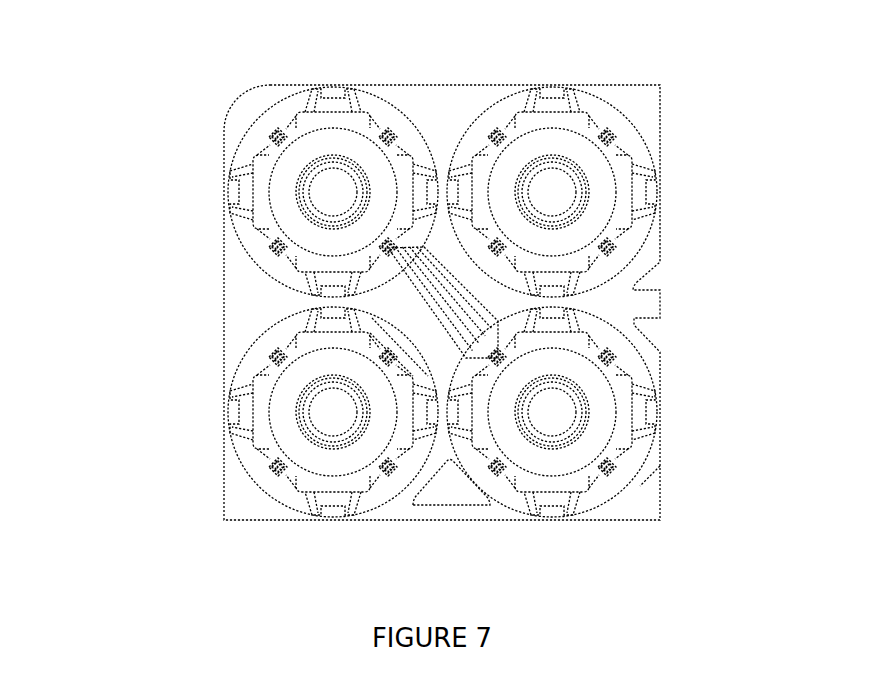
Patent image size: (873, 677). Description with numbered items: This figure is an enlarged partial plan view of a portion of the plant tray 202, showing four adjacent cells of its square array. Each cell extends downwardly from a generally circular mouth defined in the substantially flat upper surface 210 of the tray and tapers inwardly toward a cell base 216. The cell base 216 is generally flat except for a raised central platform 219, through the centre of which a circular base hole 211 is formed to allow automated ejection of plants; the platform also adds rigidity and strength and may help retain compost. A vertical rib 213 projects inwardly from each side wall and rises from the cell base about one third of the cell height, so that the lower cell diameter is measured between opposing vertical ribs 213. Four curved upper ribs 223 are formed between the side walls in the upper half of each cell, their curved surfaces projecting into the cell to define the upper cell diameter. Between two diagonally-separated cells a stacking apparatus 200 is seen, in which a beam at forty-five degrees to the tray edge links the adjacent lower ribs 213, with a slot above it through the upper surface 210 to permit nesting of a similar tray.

The plant tray 202 is at (418, 282).
The upper surface 210 is at (465, 108).
The vertical rib 213 is at (285, 142).
The circular base hole 211 is at (560, 190).
The stacking apparatus 200 is at (427, 288).
The raised central platform 219 is at (578, 393).
The cell base 216 is at (562, 457).
The curved upper rib 223 is at (307, 483).